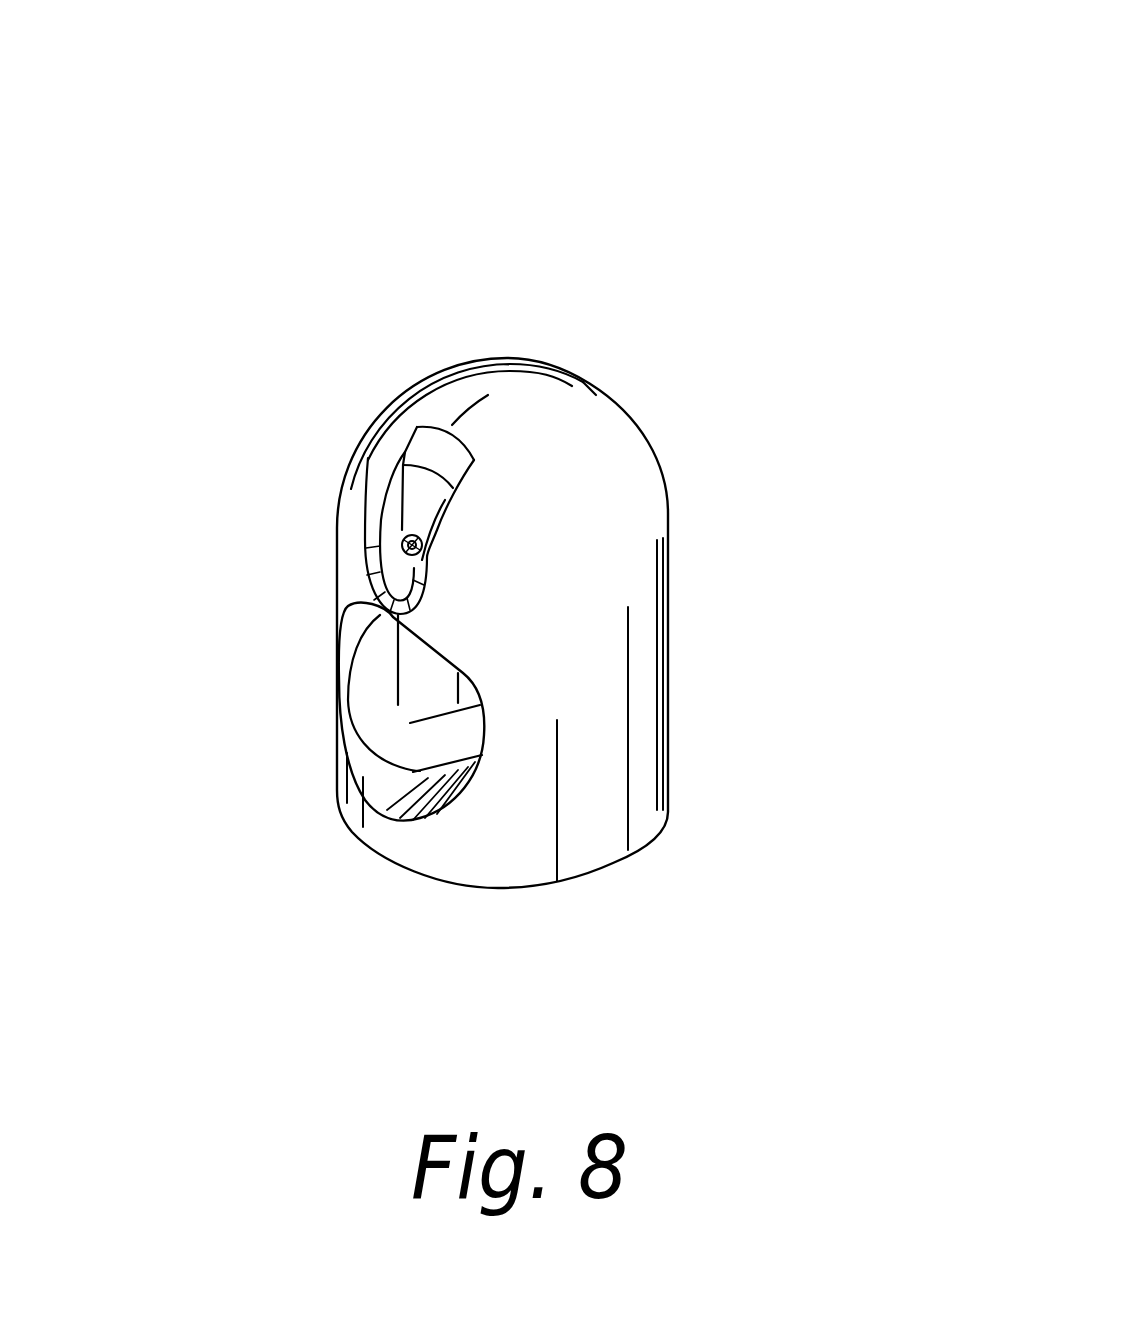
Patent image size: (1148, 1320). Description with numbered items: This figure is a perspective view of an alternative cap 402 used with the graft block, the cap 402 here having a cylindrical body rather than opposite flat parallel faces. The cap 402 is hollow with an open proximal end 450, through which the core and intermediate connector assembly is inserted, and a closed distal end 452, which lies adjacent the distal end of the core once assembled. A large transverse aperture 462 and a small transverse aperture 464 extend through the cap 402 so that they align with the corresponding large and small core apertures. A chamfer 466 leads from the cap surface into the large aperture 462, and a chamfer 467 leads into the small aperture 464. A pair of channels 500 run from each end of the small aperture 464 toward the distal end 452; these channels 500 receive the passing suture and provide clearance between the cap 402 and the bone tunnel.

The cap 402 is at (836, 178).
The open proximal end 450 is at (610, 862).
The closed distal end 452 is at (473, 385).
The channels 500 is at (418, 493).
The chamfer 467 is at (405, 535).
The small transverse aperture 464 is at (403, 543).
The large transverse aperture 462 is at (418, 674).
The chamfer 466 is at (370, 760).